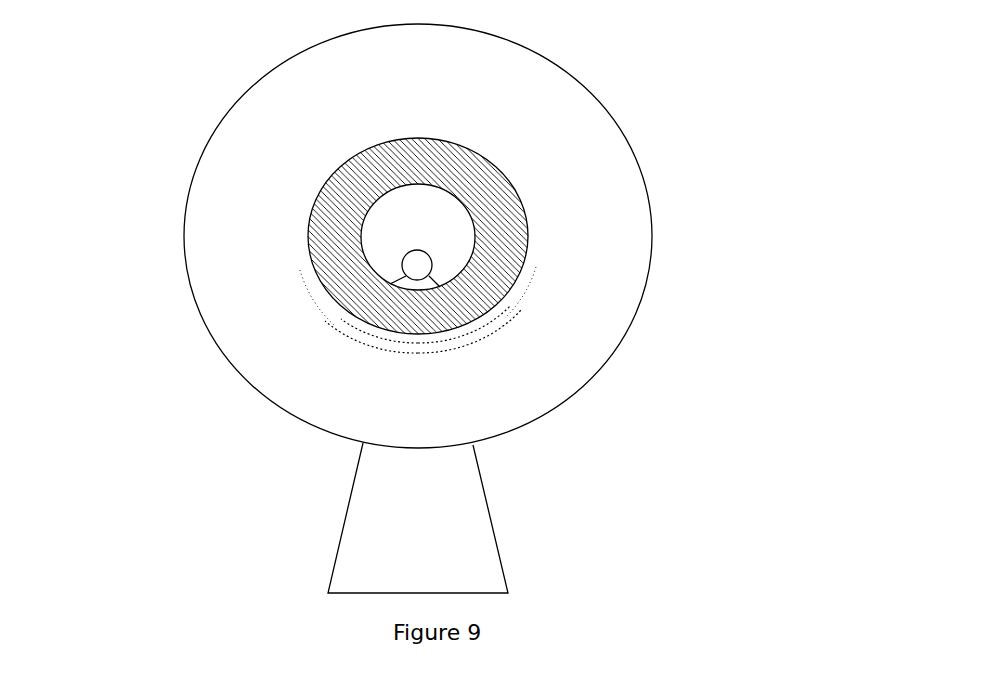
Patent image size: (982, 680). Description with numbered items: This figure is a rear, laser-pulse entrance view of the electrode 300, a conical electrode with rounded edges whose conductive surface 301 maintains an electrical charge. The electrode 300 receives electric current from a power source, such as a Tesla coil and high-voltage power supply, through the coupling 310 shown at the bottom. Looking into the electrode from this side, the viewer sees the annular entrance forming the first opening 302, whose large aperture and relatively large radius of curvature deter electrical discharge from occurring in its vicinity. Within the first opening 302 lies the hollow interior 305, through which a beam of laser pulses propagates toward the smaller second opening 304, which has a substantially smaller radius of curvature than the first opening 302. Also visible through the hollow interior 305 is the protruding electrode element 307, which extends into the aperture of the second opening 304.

The electrode 300 is at (770, 78).
The conductive surface 301 is at (643, 175).
The first opening 302 is at (528, 230).
The second opening 304 is at (477, 247).
The hollow interior 305 is at (492, 185).
The protruding electrode element 307 is at (402, 262).
The coupling 310 is at (500, 560).